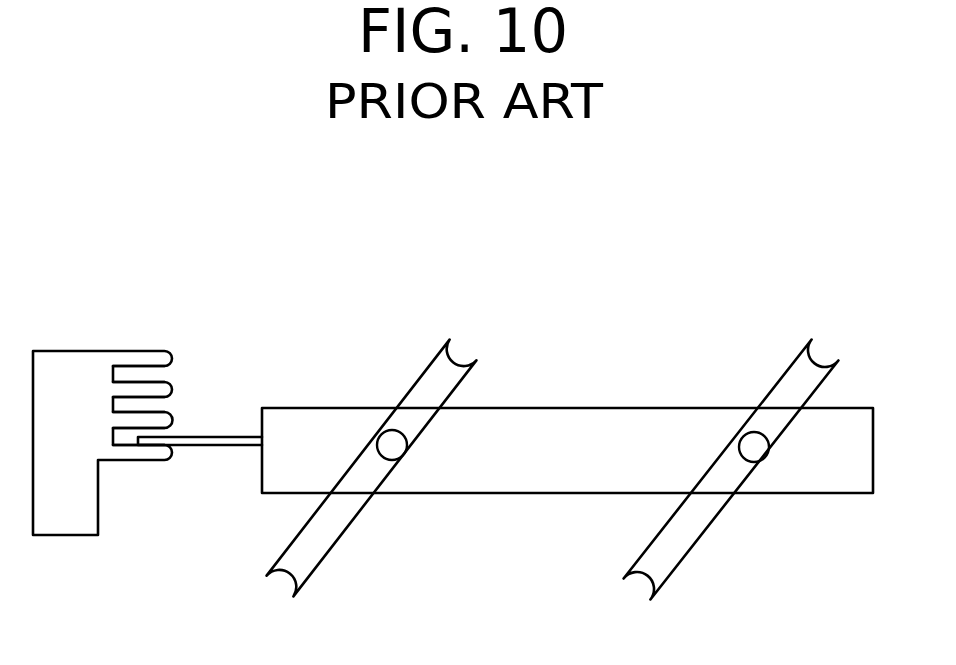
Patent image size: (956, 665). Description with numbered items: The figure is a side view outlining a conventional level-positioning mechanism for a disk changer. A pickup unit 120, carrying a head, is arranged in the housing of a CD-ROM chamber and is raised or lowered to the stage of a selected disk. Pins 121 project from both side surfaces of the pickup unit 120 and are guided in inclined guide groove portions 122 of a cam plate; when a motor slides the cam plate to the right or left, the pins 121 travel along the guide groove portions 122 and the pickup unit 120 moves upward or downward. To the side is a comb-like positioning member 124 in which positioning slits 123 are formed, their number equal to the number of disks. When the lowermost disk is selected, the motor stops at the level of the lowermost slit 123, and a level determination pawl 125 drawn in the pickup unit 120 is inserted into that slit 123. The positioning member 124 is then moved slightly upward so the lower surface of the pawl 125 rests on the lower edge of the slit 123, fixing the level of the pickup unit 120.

The pickup unit 120 is at (655, 427).
The pins 121 is at (387, 438).
The inclined guide groove portions 122 is at (447, 362).
The positioning slits 123 is at (137, 373).
The comb-like positioning member 124 is at (67, 349).
The level determination pawl 125 is at (225, 445).